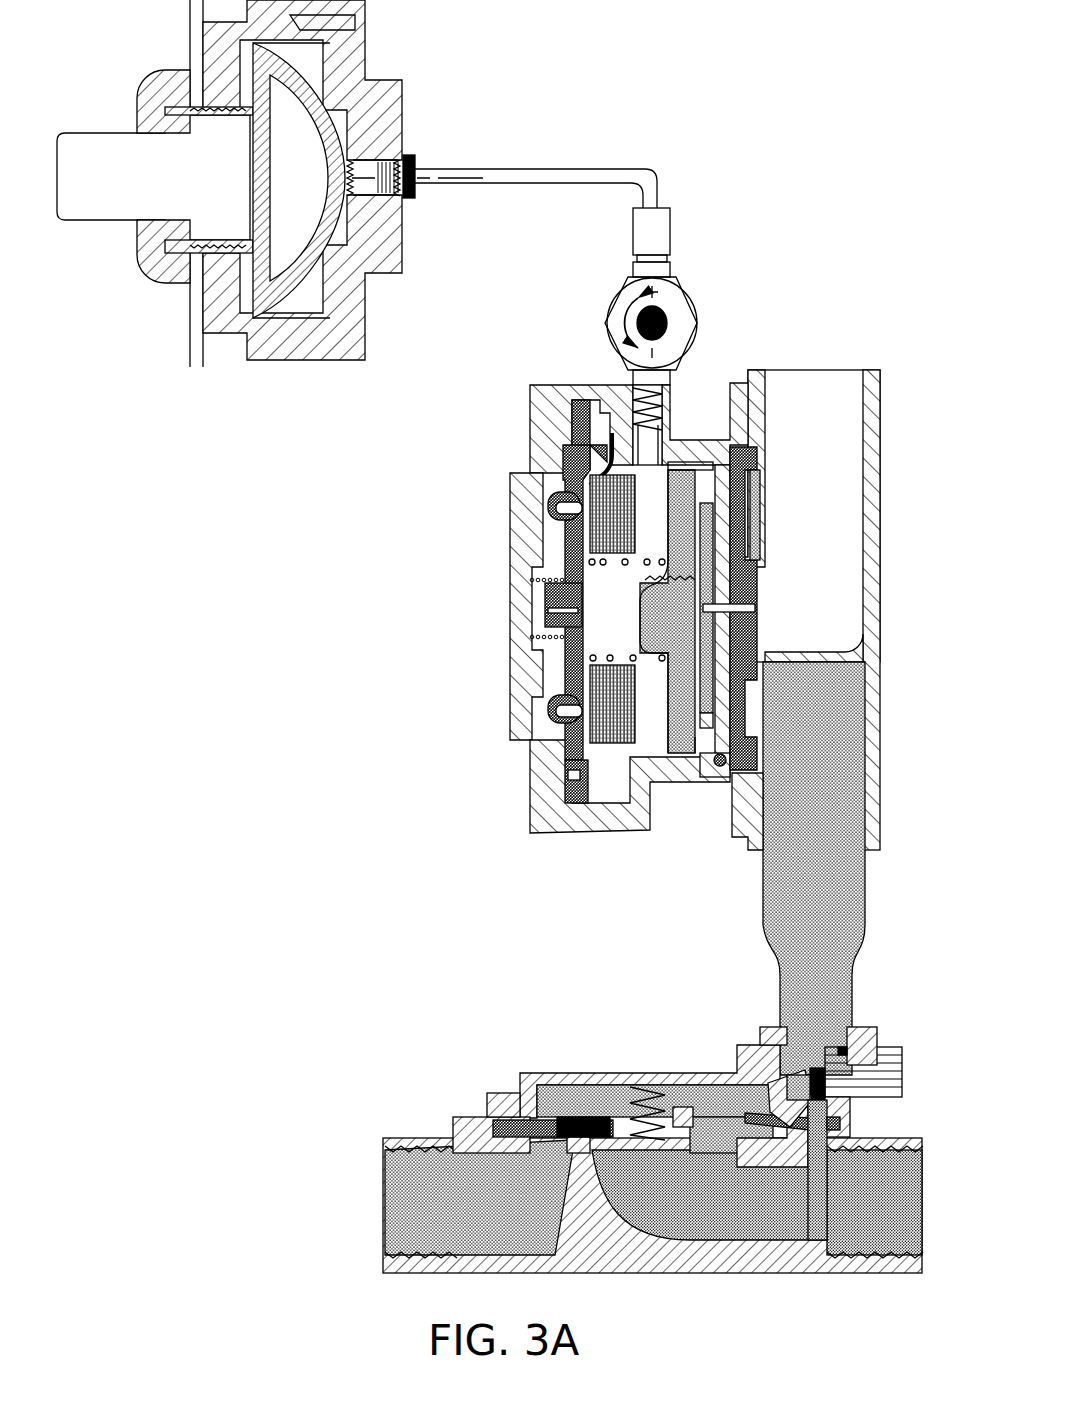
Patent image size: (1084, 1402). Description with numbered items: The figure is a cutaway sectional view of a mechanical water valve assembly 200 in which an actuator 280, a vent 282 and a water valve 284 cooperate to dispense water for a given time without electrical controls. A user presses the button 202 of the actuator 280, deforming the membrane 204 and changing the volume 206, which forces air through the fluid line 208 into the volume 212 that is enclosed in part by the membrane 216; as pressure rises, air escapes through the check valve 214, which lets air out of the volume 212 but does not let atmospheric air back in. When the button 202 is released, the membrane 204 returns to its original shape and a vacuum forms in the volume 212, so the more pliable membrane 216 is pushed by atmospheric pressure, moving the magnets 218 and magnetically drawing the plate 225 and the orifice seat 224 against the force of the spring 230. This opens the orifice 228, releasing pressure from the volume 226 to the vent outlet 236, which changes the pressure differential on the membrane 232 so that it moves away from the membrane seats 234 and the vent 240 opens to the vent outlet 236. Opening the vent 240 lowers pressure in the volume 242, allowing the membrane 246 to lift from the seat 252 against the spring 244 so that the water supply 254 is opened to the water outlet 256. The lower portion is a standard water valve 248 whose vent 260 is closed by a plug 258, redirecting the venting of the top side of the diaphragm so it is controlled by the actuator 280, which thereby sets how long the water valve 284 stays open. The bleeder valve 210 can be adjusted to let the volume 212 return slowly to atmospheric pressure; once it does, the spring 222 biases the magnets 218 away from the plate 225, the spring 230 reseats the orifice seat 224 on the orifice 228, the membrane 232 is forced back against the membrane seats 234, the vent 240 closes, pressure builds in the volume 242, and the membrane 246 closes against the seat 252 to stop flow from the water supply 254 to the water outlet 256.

The mechanical water valve assembly 200 is at (226, 658).
The button 202 is at (138, 155).
The membrane 204 is at (355, 48).
The volume 206 is at (328, 238).
The fluid line 208 is at (637, 175).
The bleeder valve 210 is at (677, 302).
The volume 212 is at (605, 410).
The check valve 214 is at (550, 607).
The membrane 216 is at (550, 497).
The magnets 218 is at (600, 662).
The spring 222 is at (582, 553).
The orifice seat 224 is at (678, 680).
The plate 225 is at (695, 740).
The volume 226 is at (590, 772).
The orifice 228 is at (753, 603).
The spring 230 is at (607, 677).
The membrane 232 is at (745, 512).
The membrane seats 234 is at (753, 652).
The vent outlet 236 is at (852, 397).
The vent 240 is at (838, 993).
The volume 242 is at (713, 1092).
The spring 244 is at (647, 1090).
The membrane 246 is at (508, 1125).
The standard water valve 248 is at (453, 1133).
The seat 252 is at (724, 1140).
The water supply 254 is at (442, 1219).
The water outlet 256 is at (864, 1216).
The plug 258 is at (825, 1083).
The vent 260 is at (842, 1120).
The actuator 280 is at (211, 402).
The vent 282 is at (361, 515).
The water valve 284 is at (293, 938).